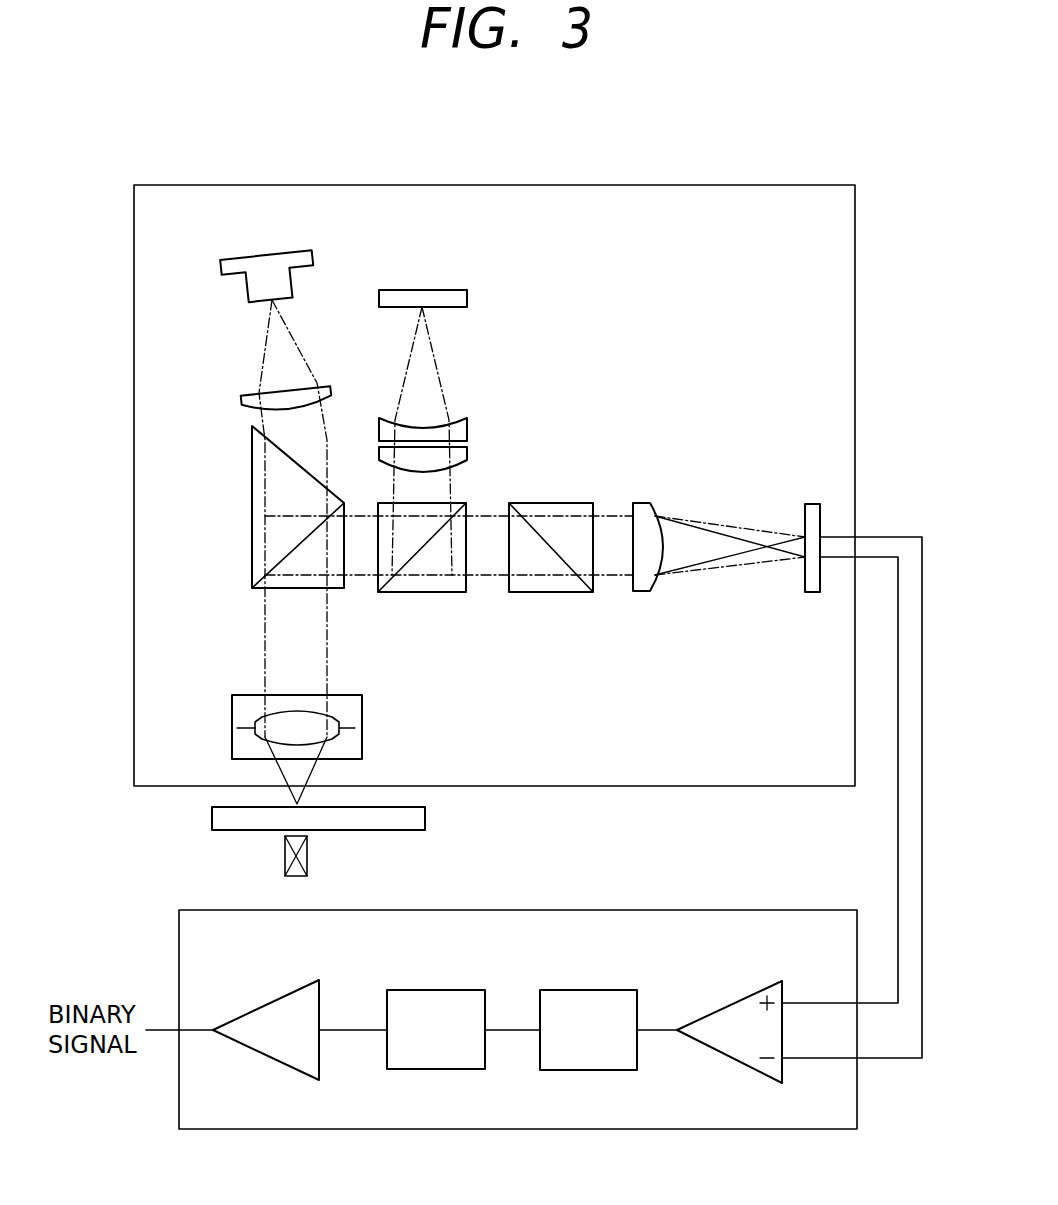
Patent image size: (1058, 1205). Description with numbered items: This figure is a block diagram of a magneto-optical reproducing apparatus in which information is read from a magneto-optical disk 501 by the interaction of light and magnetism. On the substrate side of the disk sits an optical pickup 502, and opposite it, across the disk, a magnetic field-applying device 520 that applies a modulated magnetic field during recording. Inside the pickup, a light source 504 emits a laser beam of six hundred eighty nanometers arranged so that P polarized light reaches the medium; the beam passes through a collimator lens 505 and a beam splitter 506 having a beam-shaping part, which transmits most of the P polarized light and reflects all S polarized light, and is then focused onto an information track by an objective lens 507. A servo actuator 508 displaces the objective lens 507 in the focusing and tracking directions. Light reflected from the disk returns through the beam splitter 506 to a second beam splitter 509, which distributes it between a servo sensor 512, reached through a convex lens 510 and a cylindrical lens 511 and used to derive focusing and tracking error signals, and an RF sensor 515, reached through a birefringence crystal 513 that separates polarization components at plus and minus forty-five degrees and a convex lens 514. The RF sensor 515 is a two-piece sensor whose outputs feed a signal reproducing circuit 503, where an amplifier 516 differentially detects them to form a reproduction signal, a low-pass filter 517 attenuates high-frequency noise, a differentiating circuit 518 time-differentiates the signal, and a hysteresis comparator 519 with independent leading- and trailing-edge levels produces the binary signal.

The magneto-optical disk 501 is at (425, 820).
The optical pickup 502 is at (580, 185).
The signal reproducing circuit 503 is at (615, 910).
The light source 504 is at (312, 252).
The collimator lens 505 is at (330, 388).
The beam splitter 506 is at (252, 532).
The objective lens 507 is at (338, 738).
The servo actuator 508 is at (366, 695).
The beam splitter 509 is at (427, 592).
The convex lens 510 is at (470, 450).
The cylindrical lens 511 is at (470, 428).
The servo sensor 512 is at (470, 293).
The birefringence crystal 513 is at (547, 592).
The convex lens 514 is at (650, 503).
The RF sensor 515 is at (810, 592).
The amplifier 516 is at (725, 1058).
The low-pass filter 517 is at (600, 1070).
The differentiating circuit 518 is at (470, 1069).
The hysteresis comparator 519 is at (260, 1057).
The magnetic field-applying device 520 is at (307, 860).